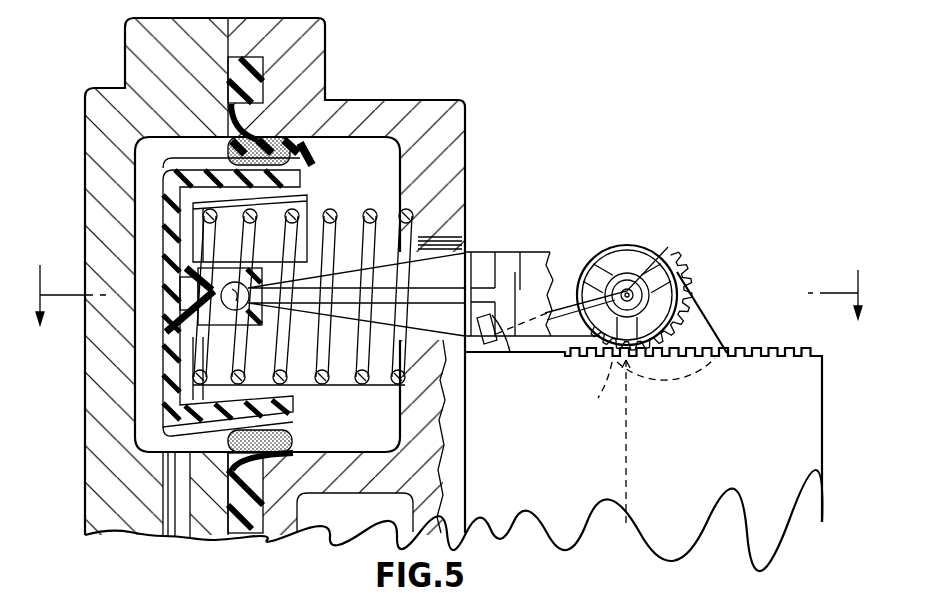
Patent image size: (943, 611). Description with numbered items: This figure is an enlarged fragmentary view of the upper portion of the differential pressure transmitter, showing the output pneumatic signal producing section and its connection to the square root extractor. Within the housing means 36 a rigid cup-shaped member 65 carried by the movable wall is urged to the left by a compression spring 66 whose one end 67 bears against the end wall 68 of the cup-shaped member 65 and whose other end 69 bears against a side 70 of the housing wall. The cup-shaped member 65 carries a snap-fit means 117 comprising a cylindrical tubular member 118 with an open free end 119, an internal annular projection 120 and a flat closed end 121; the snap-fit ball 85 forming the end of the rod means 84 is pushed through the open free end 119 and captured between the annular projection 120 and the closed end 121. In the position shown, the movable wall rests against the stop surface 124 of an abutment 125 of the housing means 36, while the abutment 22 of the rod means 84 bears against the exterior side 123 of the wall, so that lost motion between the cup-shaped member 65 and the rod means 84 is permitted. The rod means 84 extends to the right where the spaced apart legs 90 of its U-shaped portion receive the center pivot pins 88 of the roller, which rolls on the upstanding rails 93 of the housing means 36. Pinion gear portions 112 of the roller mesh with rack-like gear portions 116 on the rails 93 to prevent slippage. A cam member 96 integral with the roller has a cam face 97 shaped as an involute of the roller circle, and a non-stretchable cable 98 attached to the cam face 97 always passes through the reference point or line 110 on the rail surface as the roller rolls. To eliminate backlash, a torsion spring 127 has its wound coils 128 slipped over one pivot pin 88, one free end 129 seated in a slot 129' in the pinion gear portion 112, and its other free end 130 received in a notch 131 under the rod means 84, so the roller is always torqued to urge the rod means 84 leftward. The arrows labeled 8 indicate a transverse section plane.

The section line 8- 8 is at (447, 295).
The arm 22 is at (474, 318).
The housing means 36 is at (100, 503).
The cup-shaped member 65 is at (293, 150).
The compression spring 66 is at (365, 207).
The end of compression spring 67 is at (175, 407).
The end wall of cup-shaped member 68 is at (197, 222).
The other end of compression spring 69 is at (395, 190).
The side of wall 70 is at (403, 393).
The rod means 84 is at (447, 270).
The snap-fit ball 85 is at (180, 365).
The center pivot pins 88 is at (653, 282).
The spaced apart legs 90 is at (532, 268).
The upstanding rails 93 is at (807, 440).
The cam member 96 is at (710, 327).
The cam face 97 is at (683, 372).
The non-stretchable cable 98 is at (626, 462).
The reference point or line 110 is at (586, 390).
The pinion gear portions 112 is at (703, 330).
The rack-like gear portions 116 is at (775, 350).
The snap-fit means 117 is at (300, 197).
The cylindrical tubular member 118 is at (228, 200).
The open free end 119 is at (252, 312).
The internal annular projection 120 is at (218, 432).
The flat closed end 121 is at (218, 290).
The exterior side of wall 123 is at (467, 190).
The stop surface 124 is at (172, 290).
The abutment 125 is at (207, 330).
The torsion spring 127 is at (565, 283).
The wound coils 128 is at (687, 278).
The free end of torsion spring 129 is at (635, 261).
The slot 129' is at (679, 232).
The other free end of torsion spring 130 is at (478, 345).
The notch 131 is at (495, 316).